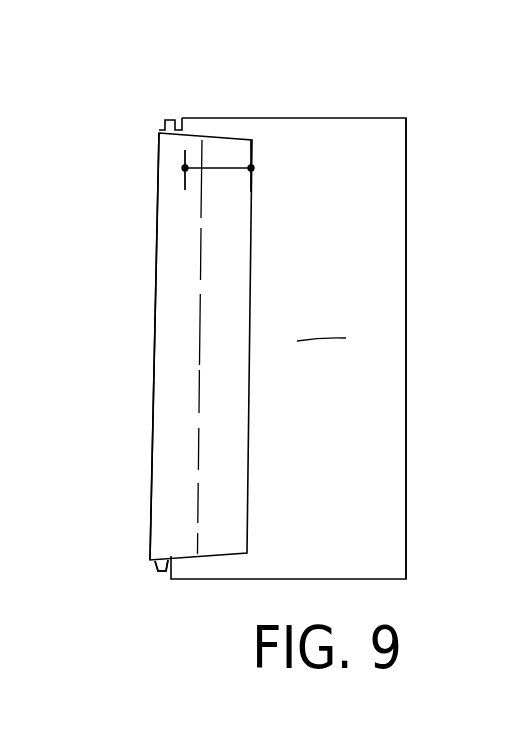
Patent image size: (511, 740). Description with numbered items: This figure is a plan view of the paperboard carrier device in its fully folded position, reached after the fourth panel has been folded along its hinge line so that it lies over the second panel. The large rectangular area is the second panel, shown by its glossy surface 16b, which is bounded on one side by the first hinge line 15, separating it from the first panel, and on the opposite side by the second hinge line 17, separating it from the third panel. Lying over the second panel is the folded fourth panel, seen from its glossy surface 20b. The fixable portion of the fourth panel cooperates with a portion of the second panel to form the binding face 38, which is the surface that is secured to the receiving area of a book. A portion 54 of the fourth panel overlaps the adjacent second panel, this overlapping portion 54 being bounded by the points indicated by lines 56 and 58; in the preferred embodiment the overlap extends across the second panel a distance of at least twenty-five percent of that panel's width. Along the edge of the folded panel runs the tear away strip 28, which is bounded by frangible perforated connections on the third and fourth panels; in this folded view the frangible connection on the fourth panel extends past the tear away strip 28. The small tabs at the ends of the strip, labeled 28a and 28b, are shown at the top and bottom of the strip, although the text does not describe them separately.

The first hinge line 15 is at (157, 267).
The glossy surface 16b is at (321, 324).
The second hinge line 17 is at (397, 322).
The glossy surface 20b is at (170, 322).
The tear away strip 28 is at (155, 566).
The upper tab 28a is at (163, 128).
The lower tab 28b is at (163, 571).
The binding face 38 is at (363, 210).
The portion 54 is at (217, 167).
The line 56 is at (183, 181).
The line 58 is at (253, 187).